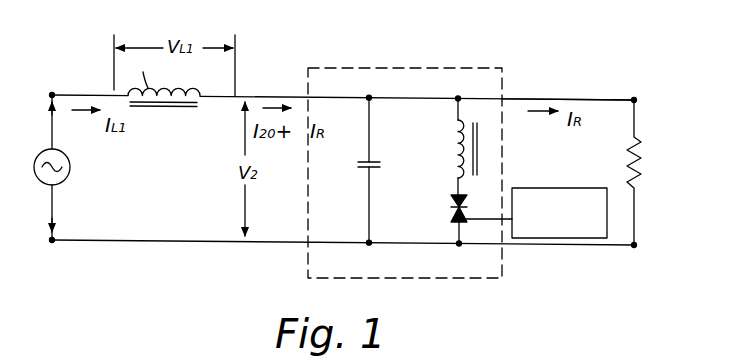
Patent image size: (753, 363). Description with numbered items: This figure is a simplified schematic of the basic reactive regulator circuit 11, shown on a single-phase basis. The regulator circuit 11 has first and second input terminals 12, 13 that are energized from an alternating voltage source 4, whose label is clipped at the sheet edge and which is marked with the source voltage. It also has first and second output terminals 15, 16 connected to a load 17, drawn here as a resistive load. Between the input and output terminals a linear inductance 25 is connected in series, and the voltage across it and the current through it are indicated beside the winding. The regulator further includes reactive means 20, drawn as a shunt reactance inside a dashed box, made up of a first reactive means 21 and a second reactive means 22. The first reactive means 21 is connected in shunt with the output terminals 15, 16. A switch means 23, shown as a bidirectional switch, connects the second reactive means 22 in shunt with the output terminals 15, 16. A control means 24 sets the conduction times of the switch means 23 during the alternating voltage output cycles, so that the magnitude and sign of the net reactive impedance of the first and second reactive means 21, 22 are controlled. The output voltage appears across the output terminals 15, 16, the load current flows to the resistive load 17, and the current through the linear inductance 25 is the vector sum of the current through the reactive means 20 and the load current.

The alternating voltage source 4 is at (38, 157).
The reactive regulator circuit 11 is at (539, 81).
The first input terminal 12 is at (52, 94).
The second input terminal 13 is at (53, 241).
The first output terminal 15 is at (636, 99).
The second output terminal 16 is at (636, 246).
The load 17 is at (641, 149).
The reactive means 20 is at (418, 68).
The first reactive means 21 is at (362, 168).
The second reactive means 22 is at (457, 145).
The switch means 23 is at (452, 201).
The control means 24 is at (541, 188).
The linear inductance 25 is at (165, 88).